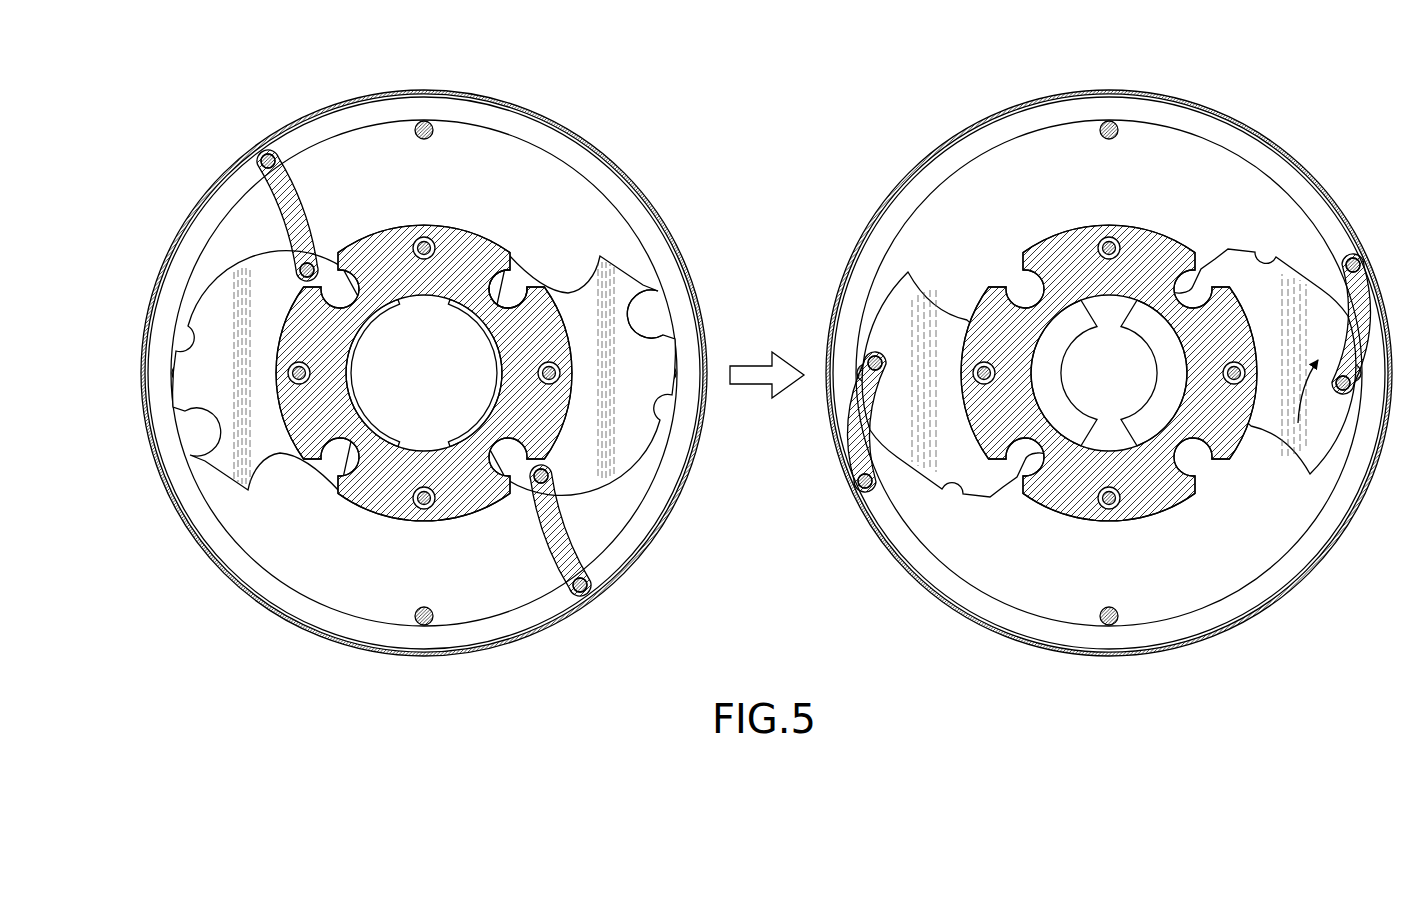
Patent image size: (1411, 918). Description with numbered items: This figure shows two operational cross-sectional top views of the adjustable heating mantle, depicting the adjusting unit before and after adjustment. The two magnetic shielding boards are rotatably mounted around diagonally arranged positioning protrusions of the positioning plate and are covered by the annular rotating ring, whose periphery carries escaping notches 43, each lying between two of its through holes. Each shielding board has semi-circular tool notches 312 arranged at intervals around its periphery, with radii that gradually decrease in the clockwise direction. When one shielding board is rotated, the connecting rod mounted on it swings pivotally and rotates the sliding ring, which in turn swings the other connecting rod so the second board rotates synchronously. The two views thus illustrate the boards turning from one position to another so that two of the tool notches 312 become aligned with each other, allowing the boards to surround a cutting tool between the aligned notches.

The tool notch 312 is at (655, 298).
The escaping notch 43 is at (505, 268).